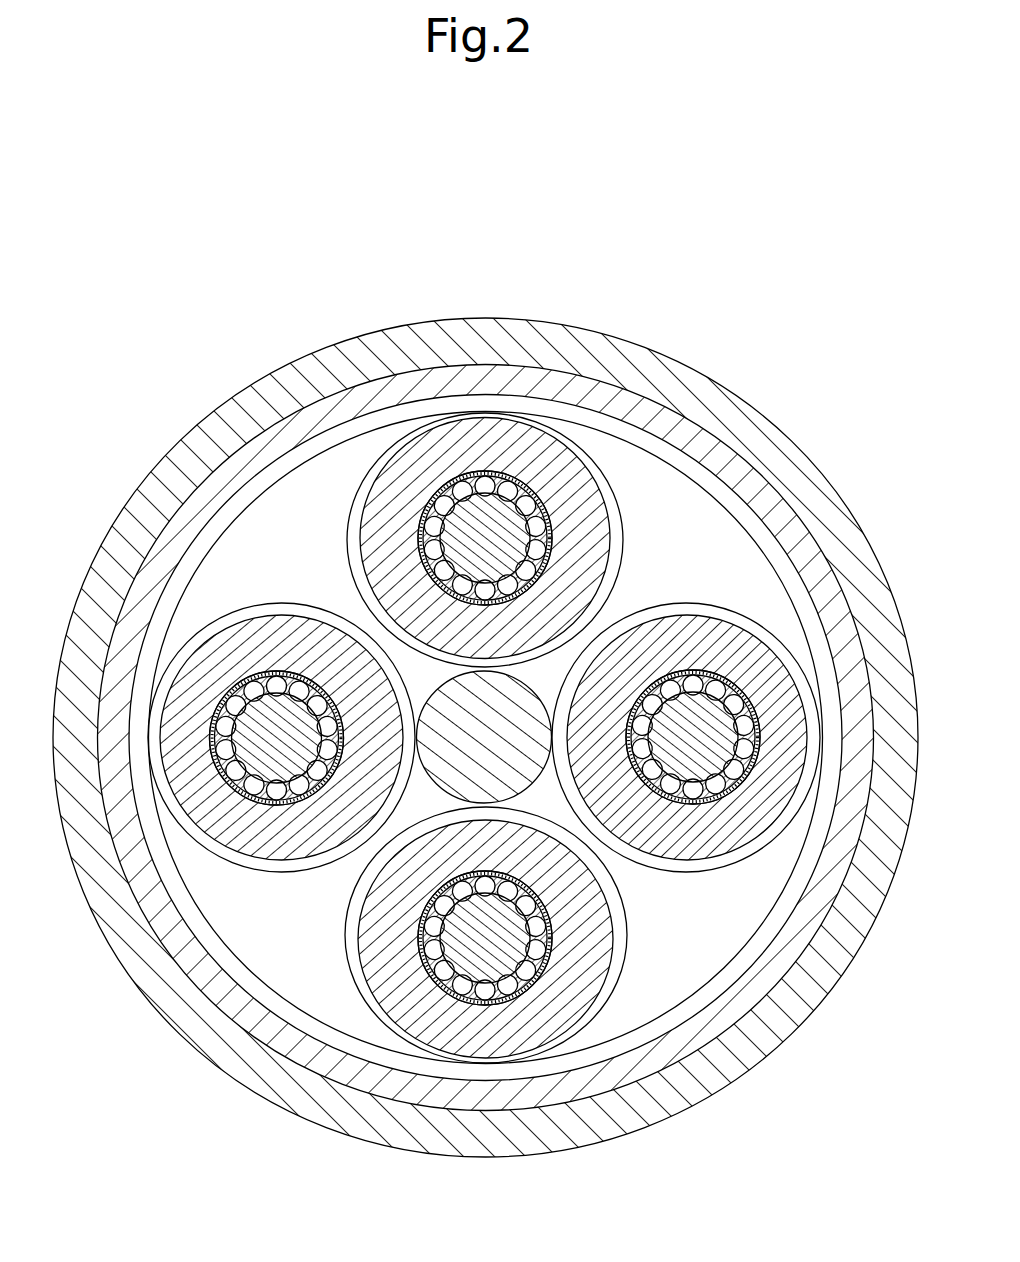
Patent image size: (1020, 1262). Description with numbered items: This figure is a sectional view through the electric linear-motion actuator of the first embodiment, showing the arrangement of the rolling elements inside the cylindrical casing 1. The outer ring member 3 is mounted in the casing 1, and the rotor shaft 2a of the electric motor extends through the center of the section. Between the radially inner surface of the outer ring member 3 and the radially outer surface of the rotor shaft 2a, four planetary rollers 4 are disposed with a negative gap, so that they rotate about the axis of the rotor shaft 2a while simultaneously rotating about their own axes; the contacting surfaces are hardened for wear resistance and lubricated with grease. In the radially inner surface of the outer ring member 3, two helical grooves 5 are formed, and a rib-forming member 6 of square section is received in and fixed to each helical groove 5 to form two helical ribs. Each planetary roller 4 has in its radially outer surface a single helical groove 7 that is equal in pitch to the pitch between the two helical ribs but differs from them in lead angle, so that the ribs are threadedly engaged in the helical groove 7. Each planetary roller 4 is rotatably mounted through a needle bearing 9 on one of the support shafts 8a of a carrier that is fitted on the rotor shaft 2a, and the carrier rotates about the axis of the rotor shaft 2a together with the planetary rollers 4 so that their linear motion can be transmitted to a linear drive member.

The cylindrical casing 1 is at (713, 415).
The rotor shaft 2a is at (525, 725).
The outer ring member 3 is at (738, 460).
The planetary roller 4 is at (486, 442).
The helical groove 5 is at (581, 413).
The rib-forming member 6 is at (663, 458).
The helical groove 7 is at (607, 490).
The support shaft 8a is at (460, 490).
The needle bearing 9 is at (462, 478).